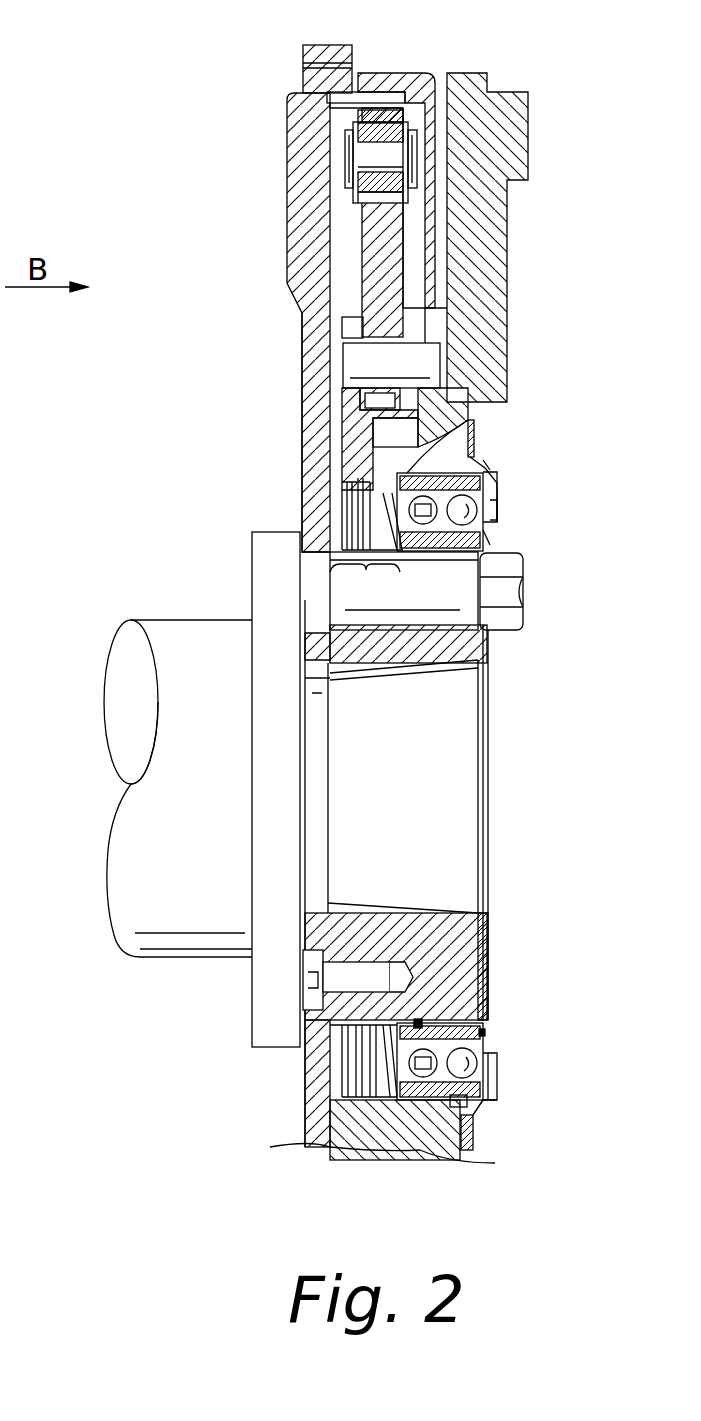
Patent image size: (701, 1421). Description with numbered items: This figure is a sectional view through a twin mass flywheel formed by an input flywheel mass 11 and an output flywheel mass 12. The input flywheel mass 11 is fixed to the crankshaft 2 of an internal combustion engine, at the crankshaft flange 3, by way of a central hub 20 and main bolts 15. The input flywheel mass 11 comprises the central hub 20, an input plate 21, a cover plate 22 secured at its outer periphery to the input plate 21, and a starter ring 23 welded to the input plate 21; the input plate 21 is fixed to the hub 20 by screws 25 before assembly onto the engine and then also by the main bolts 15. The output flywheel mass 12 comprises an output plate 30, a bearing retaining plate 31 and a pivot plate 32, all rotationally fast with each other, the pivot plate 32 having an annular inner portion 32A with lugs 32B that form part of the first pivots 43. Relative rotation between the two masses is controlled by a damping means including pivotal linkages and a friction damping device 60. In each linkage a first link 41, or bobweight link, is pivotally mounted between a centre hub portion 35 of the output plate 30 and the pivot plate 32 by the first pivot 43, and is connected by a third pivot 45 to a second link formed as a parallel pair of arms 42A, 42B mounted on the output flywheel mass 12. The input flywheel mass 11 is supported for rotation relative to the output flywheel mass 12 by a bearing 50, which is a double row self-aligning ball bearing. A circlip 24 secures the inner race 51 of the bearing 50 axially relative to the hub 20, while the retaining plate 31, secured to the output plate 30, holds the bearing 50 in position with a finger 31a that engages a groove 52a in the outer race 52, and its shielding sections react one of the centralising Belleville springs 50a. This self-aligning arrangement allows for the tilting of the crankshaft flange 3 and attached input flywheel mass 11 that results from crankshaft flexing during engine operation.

The crankshaft 2 is at (135, 648).
The crankshaft flange 3 is at (267, 551).
The input flywheel mass 11 is at (300, 200).
The output flywheel mass 12 is at (480, 140).
The main bolts 15 is at (505, 593).
The central hub 20 is at (487, 673).
The input plate 21 is at (298, 265).
The cover plate 22 is at (412, 75).
The starter ring 23 is at (325, 50).
The circlip 24 is at (420, 1020).
The screws 25 is at (355, 975).
The output plate 30 is at (472, 233).
The bearing retaining plate 31 is at (495, 488).
The finger 31a is at (485, 472).
The pivot plate 32 is at (345, 433).
The annular inner portion 32A is at (345, 470).
The lugs 32B is at (345, 328).
The centre hub portion 35 is at (472, 370).
The first link 41 is at (370, 237).
The arm of second link 42A is at (412, 118).
The arm of second link 42B is at (408, 118).
The first pivot 43 is at (413, 355).
The third pivot 45 is at (397, 152).
The bearing 50 is at (495, 508).
The centralising Belleville springs 50a is at (487, 540).
The inner race 51 is at (483, 1035).
The outer race 52 is at (470, 418).
The groove 52a is at (497, 1100).
The friction damping device 60 is at (404, 591).